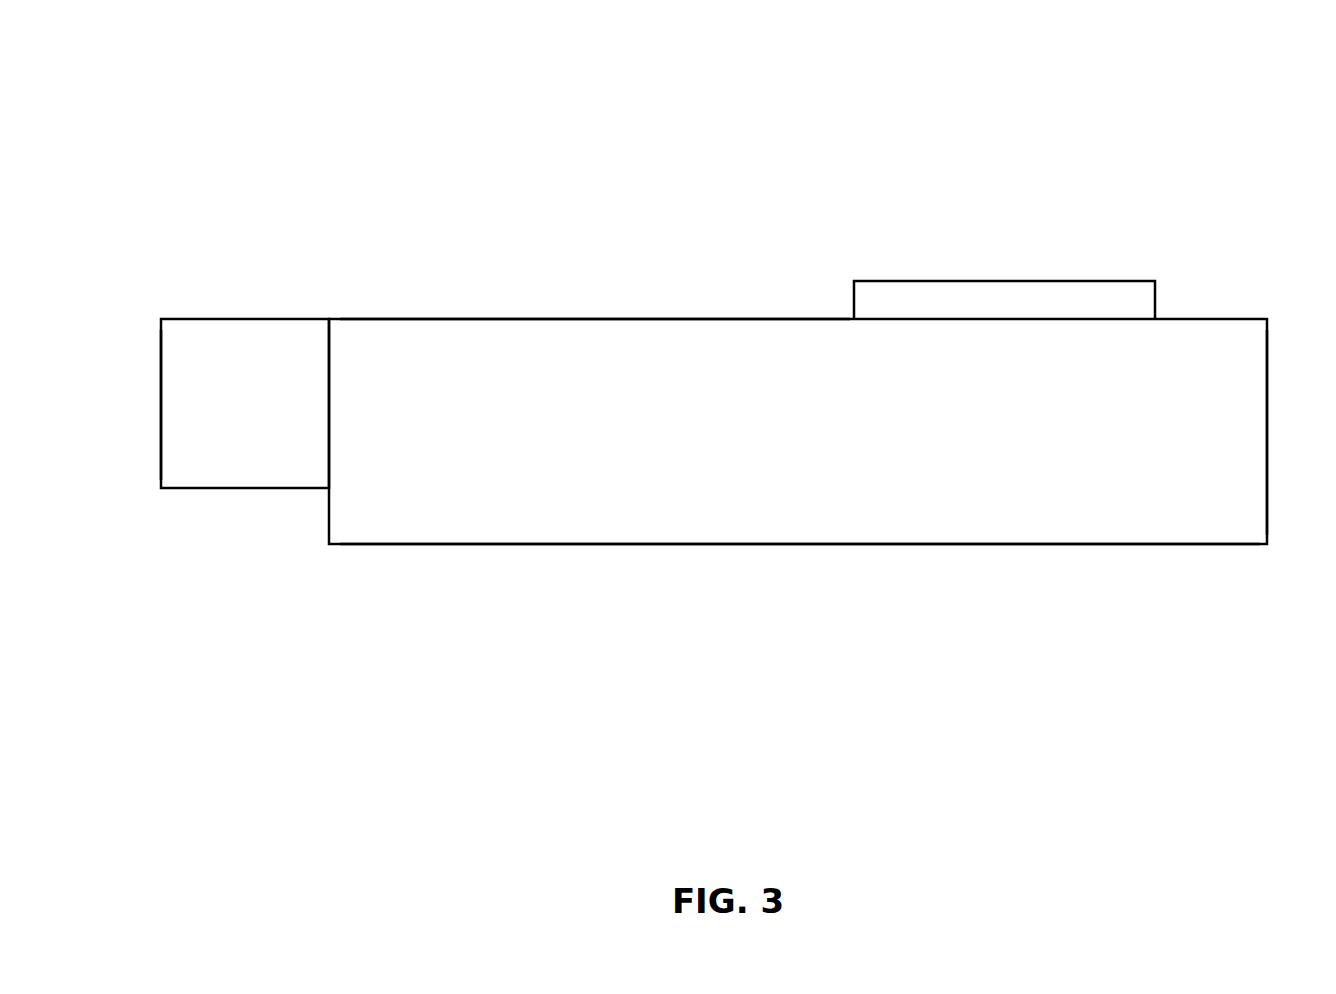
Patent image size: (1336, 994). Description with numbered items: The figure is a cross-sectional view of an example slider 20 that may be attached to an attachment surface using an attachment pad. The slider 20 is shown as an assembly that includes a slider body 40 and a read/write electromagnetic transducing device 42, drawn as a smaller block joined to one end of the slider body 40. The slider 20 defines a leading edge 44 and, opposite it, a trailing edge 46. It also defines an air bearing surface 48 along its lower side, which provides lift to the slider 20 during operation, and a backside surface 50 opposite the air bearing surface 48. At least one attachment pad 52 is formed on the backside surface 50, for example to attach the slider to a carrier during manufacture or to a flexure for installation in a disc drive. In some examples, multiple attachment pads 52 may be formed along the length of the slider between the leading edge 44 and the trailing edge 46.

The slider 20 is at (1250, 110).
The slider body 40 is at (1296, 310).
The read/write electromagnetic transducing device 42 is at (104, 303).
The leading edge 44 is at (1267, 411).
The trailing edge 46 is at (161, 416).
The air bearing surface 48 is at (748, 648).
The backside surface 50 is at (753, 318).
The attachment pad 52 is at (1018, 281).